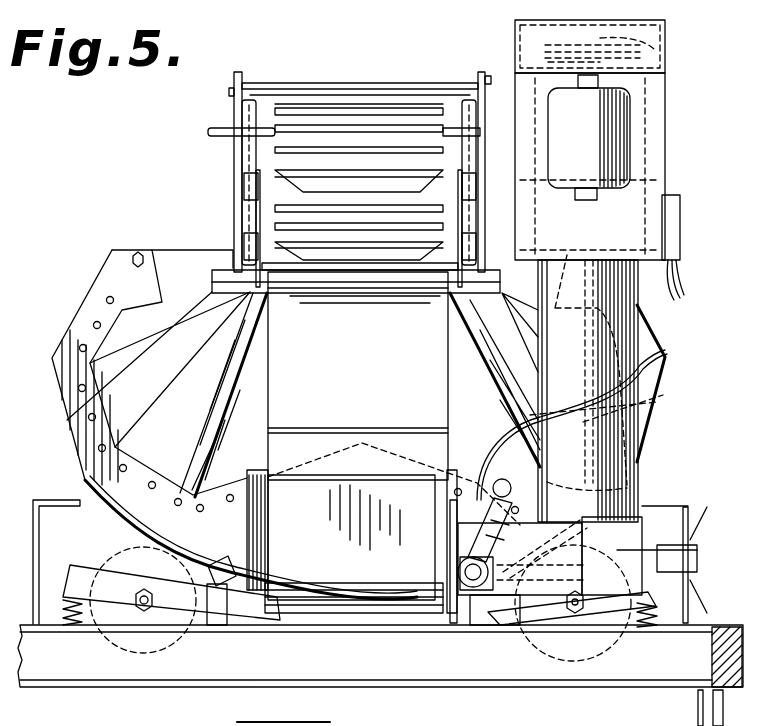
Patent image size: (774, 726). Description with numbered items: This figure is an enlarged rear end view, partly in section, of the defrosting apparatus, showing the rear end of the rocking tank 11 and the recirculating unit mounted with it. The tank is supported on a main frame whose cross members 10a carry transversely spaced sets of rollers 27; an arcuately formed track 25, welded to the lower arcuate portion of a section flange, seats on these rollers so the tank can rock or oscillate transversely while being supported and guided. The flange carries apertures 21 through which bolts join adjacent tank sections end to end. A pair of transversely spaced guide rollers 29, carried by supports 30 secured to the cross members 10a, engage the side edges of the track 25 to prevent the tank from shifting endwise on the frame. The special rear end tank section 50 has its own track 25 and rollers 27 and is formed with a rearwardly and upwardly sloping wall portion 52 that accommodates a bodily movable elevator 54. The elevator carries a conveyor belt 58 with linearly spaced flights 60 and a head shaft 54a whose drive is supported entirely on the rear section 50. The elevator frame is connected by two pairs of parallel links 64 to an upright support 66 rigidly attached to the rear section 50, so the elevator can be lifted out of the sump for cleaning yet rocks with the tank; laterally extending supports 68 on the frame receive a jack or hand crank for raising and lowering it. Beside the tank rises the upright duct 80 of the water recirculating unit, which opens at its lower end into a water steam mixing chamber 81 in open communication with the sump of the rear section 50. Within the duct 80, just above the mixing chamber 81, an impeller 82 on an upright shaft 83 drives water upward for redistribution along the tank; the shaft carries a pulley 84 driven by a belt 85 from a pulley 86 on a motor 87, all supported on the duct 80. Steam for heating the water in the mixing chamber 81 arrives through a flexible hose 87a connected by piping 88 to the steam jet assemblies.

The cross members 10a is at (185, 668).
The tank 11 is at (98, 268).
The apertures 21 is at (197, 511).
The track 25 is at (100, 503).
The rollers 27 is at (125, 555).
The guide rollers 29 is at (222, 564).
The supports 30 is at (222, 608).
The rear end tank section 50 is at (122, 392).
The sloping wall portion 52 is at (368, 371).
The elevator 54 is at (330, 130).
The head shaft 54a is at (225, 134).
The conveyor belt 58 is at (380, 127).
The flights 60 is at (378, 193).
The parallel links 64 is at (245, 106).
The upright support 66 is at (234, 78).
The laterally-extending supports 68 is at (248, 182).
The upright duct 80 is at (630, 442).
The mixing chamber 81 is at (625, 530).
The impeller 82 is at (613, 475).
The upright shaft 83 is at (587, 425).
The pulley 84 is at (655, 65).
The belt 85 is at (655, 32).
The pulley 86 is at (561, 61).
The motor 87 is at (597, 139).
The flexible hose 87a is at (460, 573).
The piping 88 is at (490, 509).